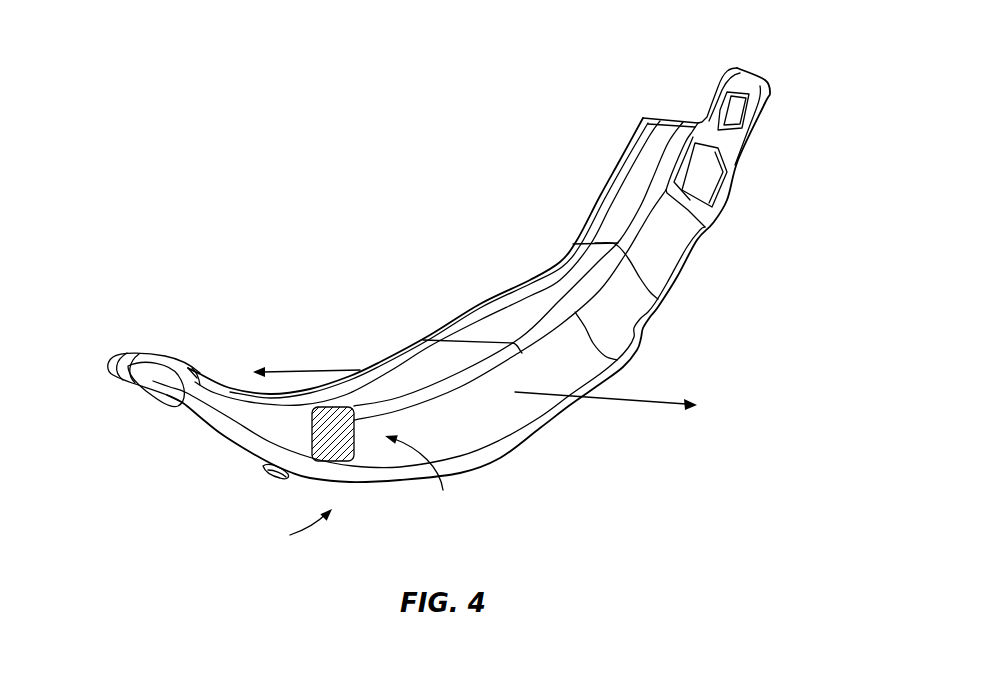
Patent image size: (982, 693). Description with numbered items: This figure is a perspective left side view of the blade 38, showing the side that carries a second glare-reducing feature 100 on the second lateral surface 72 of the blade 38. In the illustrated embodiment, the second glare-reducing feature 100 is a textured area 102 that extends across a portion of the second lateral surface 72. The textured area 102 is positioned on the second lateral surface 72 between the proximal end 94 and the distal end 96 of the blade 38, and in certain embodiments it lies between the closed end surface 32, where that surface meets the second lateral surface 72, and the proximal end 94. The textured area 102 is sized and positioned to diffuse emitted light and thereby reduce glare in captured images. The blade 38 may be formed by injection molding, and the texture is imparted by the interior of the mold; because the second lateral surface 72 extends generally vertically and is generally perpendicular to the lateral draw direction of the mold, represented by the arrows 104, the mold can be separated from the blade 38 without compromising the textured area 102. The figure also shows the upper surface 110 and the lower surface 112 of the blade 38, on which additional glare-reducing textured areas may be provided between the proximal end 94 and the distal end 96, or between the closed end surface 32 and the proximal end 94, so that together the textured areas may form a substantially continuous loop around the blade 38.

The blade 38 is at (377, 158).
The proximal end 94 is at (731, 46).
The distal end 96 is at (118, 331).
The second lateral surface 72 is at (512, 413).
The upper surface 110 is at (428, 367).
The arrows 104 is at (292, 369).
The second glare-reducing feature 100 is at (426, 474).
The textured area 102 is at (353, 440).
The lower surface 112 is at (293, 528).
The closed end surface 32 is at (262, 470).